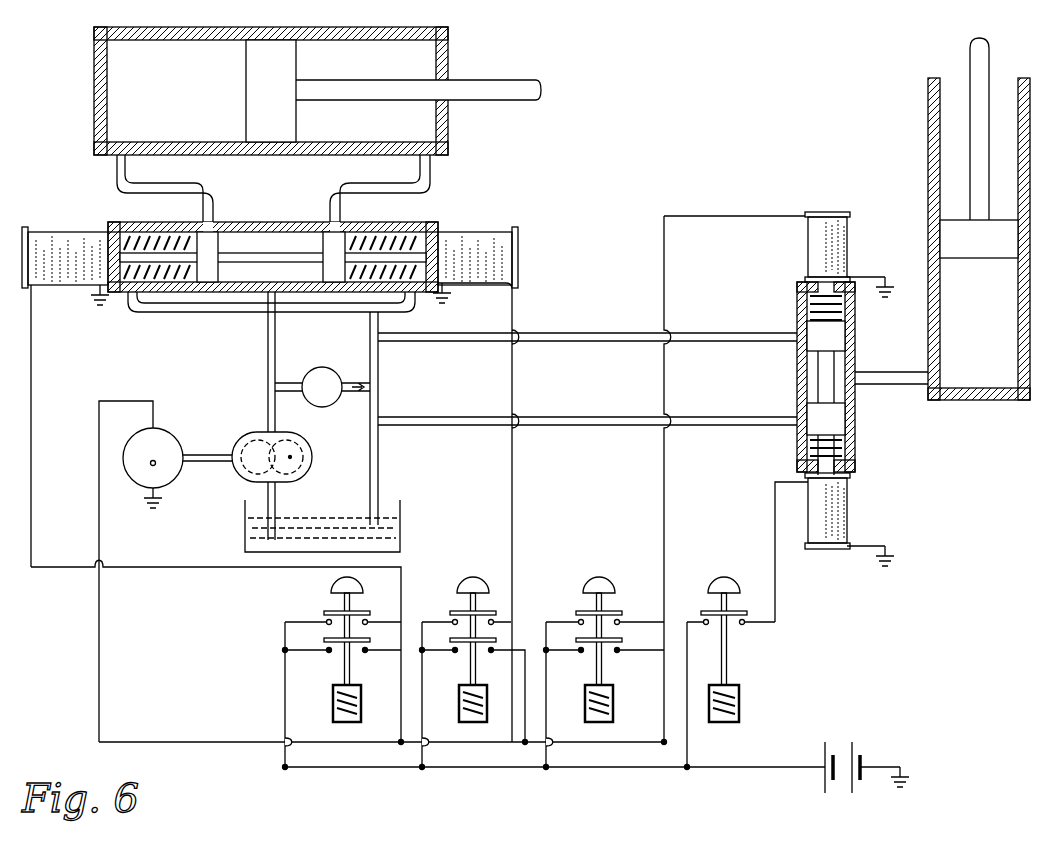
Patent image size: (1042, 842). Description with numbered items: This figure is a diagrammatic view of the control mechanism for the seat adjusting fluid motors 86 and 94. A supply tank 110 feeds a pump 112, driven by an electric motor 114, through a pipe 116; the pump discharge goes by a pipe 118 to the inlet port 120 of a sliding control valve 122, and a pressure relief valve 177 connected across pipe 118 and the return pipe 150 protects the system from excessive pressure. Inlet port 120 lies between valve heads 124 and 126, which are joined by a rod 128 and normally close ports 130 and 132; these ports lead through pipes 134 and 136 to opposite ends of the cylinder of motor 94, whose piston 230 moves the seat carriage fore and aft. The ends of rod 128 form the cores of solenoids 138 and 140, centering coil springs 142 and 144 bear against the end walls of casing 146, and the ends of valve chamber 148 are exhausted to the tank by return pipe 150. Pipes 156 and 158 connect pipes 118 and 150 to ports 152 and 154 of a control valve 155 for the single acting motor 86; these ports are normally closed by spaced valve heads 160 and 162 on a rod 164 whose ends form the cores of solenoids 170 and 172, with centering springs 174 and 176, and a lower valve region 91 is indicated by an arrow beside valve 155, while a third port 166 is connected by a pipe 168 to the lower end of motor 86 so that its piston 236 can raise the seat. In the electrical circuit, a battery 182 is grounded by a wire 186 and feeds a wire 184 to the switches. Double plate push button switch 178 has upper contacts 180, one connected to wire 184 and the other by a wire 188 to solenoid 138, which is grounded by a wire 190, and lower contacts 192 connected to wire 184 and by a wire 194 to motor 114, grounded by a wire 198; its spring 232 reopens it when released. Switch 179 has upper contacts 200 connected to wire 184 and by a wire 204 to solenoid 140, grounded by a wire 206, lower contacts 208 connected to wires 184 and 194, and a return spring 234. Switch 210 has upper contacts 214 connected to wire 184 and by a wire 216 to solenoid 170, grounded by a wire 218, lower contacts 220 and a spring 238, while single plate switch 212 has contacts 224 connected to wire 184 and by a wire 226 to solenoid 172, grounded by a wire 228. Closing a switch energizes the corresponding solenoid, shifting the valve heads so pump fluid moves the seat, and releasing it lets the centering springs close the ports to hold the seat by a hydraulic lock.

The fluid motor 94 is at (106, 42).
The piston 230 is at (277, 125).
The pipe 134 is at (117, 176).
The pipe 136 is at (432, 177).
The sliding control valve 122 is at (429, 225).
The rod 128 is at (270, 252).
The port 130 is at (205, 228).
The valve head 126 is at (330, 240).
The casing 146 is at (130, 228).
The centering coil spring 144 is at (400, 240).
The valve head 124 is at (222, 240).
The valve chamber 148 is at (284, 236).
The port 132 is at (345, 225).
The inlet port 120 is at (318, 283).
The solenoid 138 is at (58, 245).
The solenoid 140 is at (490, 240).
The wire 190 is at (100, 300).
The wire 206 is at (445, 300).
The centering coil spring 142 is at (173, 303).
The pipe 118 is at (268, 360).
The return pipe 150 is at (240, 320).
The pressure relief valve 177 is at (340, 377).
The motor 114 is at (180, 445).
The wire 198 is at (160, 507).
The pump 112 is at (310, 447).
The pipe 116 is at (290, 480).
The supply tank 110 is at (400, 537).
The pipe 156 is at (557, 333).
The pipe 158 is at (590, 425).
The wire 204 is at (512, 463).
The wire 216 is at (664, 458).
The wire 226 is at (778, 595).
The wire 188 is at (190, 568).
The wire 194 is at (180, 745).
The wire 184 is at (368, 768).
The solenoid 170 is at (820, 252).
The centering spring 174 is at (810, 310).
The valve head 160 is at (838, 336).
The rod 164 is at (828, 365).
The valve head 162 is at (832, 420).
The centering spring 176 is at (845, 448).
The port 152 is at (800, 338).
The control valve 155 is at (791, 377).
The port 154 is at (793, 412).
The chamber 91 is at (790, 451).
The third port 166 is at (852, 380).
The pipe 168 is at (918, 386).
The solenoid 172 is at (838, 494).
The wire 218 is at (875, 278).
The wire 228 is at (880, 543).
The single acting fluid motor 86 is at (935, 335).
The piston 236 is at (948, 233).
The double plate push button switch 178 is at (340, 586).
The upper contacts 180 is at (366, 624).
The lower contacts 192 is at (329, 651).
The spring 232 is at (334, 712).
The double plate push button switch 179 is at (471, 582).
The upper contacts 200 is at (491, 624).
The lower contacts 208 is at (455, 652).
The spring 234 is at (487, 715).
The push button switch 210 is at (590, 585).
The upper contacts 214 is at (617, 624).
The lower contacts 220 is at (581, 652).
The spring 238 is at (613, 715).
The push button switch 212 is at (722, 582).
The contacts 224 is at (742, 625).
The battery 182 is at (833, 745).
The wire 186 is at (890, 768).